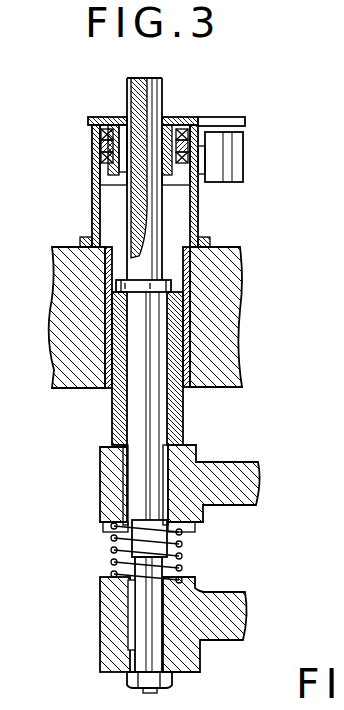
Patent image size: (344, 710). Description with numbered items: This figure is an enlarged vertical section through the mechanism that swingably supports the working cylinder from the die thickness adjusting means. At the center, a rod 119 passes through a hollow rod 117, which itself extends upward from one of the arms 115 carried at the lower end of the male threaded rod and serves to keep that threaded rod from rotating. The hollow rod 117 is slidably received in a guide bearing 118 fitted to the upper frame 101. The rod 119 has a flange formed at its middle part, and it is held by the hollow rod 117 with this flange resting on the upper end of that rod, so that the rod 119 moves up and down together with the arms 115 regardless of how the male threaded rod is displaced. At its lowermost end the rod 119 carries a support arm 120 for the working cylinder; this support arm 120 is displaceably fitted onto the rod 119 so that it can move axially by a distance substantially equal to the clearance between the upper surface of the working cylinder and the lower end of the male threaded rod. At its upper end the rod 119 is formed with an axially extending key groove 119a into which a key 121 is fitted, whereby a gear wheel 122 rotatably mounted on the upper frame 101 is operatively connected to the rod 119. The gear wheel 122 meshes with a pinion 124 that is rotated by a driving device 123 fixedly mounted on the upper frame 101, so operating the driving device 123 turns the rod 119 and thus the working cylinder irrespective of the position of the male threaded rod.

The upper frame 101 is at (243, 272).
The arms 115 is at (253, 455).
The rod 117 is at (182, 410).
The guide bearing 118 is at (188, 326).
The rod 119 is at (168, 552).
The key groove 119a is at (124, 204).
The support arm 120 is at (246, 596).
The key 121 is at (124, 138).
The gear wheel 122 is at (188, 116).
The driving device 123 is at (250, 149).
The pinion 124 is at (247, 121).